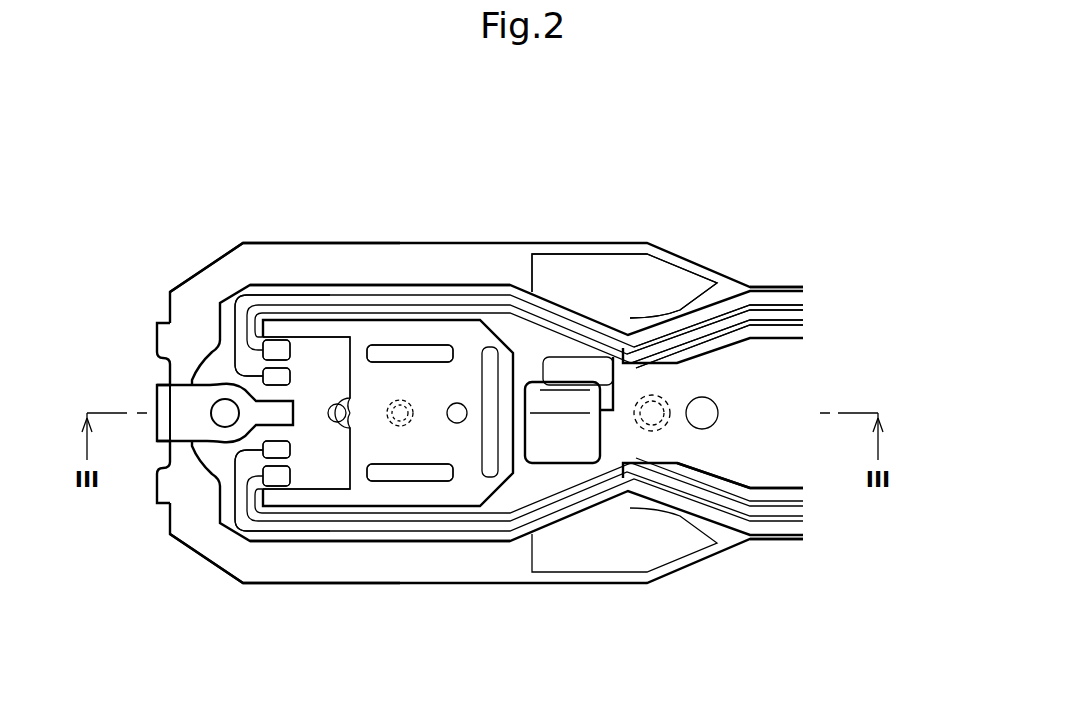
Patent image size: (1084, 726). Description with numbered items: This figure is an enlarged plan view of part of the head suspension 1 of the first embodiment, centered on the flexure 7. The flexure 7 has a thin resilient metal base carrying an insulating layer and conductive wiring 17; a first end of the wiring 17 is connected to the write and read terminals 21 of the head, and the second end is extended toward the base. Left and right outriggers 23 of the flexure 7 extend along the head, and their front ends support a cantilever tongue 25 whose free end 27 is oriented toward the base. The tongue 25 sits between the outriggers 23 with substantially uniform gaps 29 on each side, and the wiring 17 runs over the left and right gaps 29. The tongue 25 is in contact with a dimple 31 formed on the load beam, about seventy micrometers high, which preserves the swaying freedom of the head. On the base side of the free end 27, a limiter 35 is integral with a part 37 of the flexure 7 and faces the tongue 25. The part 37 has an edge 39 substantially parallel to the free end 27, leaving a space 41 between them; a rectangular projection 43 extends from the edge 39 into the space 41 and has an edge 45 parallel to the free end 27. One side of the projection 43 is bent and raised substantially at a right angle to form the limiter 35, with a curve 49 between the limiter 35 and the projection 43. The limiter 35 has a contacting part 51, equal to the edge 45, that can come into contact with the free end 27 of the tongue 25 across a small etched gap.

The head suspension 1 is at (720, 195).
The flexure 7 is at (755, 362).
The conductive wiring 17 is at (345, 288).
The write and read terminals 21 is at (277, 377).
The outriggers 23 is at (247, 242).
The cantilever tongue 25 is at (443, 433).
The free end 27 is at (453, 345).
The gaps 29 is at (320, 292).
The dimple 31 is at (400, 428).
The limiter 35 is at (700, 517).
The part of the flexure 37 is at (627, 400).
The edge 39 is at (594, 363).
The space 41 is at (557, 348).
The projection 43 is at (570, 440).
The edge of the projection 45 is at (488, 425).
The curve 49 is at (550, 400).
The contacting part 51 is at (525, 430).